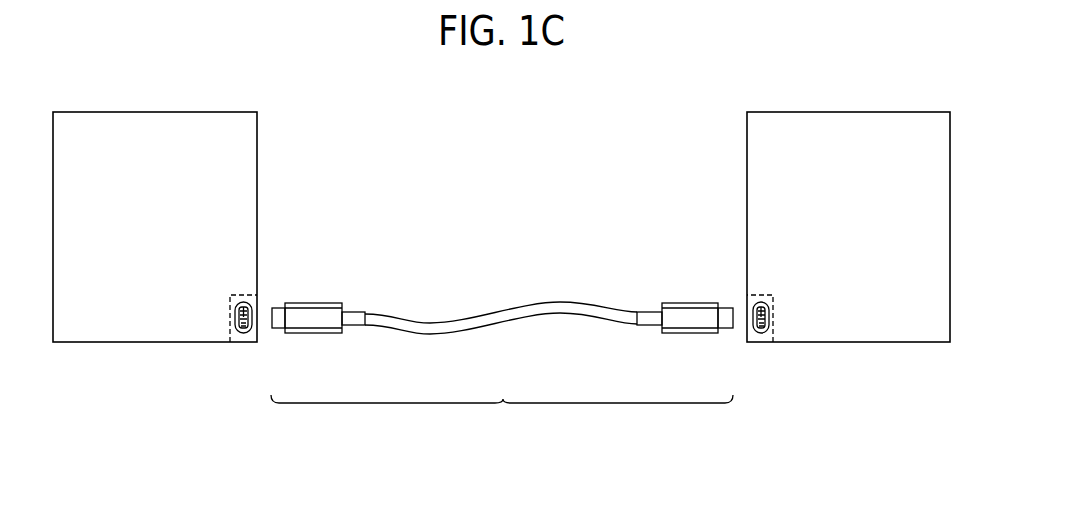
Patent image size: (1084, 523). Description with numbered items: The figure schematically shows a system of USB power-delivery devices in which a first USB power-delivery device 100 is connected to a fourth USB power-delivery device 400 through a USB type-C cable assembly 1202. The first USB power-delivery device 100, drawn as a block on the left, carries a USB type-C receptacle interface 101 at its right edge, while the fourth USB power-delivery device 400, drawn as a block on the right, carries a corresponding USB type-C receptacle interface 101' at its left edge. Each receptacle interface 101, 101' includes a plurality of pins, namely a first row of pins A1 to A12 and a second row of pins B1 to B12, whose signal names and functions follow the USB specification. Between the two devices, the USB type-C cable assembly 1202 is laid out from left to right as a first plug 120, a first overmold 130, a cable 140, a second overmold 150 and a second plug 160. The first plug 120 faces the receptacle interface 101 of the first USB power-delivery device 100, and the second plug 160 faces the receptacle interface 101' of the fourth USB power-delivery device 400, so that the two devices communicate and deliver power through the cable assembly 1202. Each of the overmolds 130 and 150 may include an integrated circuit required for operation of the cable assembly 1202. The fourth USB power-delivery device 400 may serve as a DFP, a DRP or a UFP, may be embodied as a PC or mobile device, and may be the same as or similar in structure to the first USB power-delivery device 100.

The first USB power-delivery device 100 is at (155, 112).
The fourth USB power-delivery device 400 is at (847, 112).
The USB type-C receptacle interface 101 is at (228, 297).
The USB type-C receptacle interface 101' is at (776, 297).
The pin A1 is at (235, 307).
The pin A12 is at (238, 333).
The pin B1 is at (247, 333).
The pin B12 is at (250, 307).
The first plug 120 is at (278, 323).
The first overmold 130 is at (327, 323).
The cable 140 is at (500, 315).
The second overmold 150 is at (677, 323).
The second plug 160 is at (725, 323).
The USB type-C cable assembly 1202 is at (502, 416).